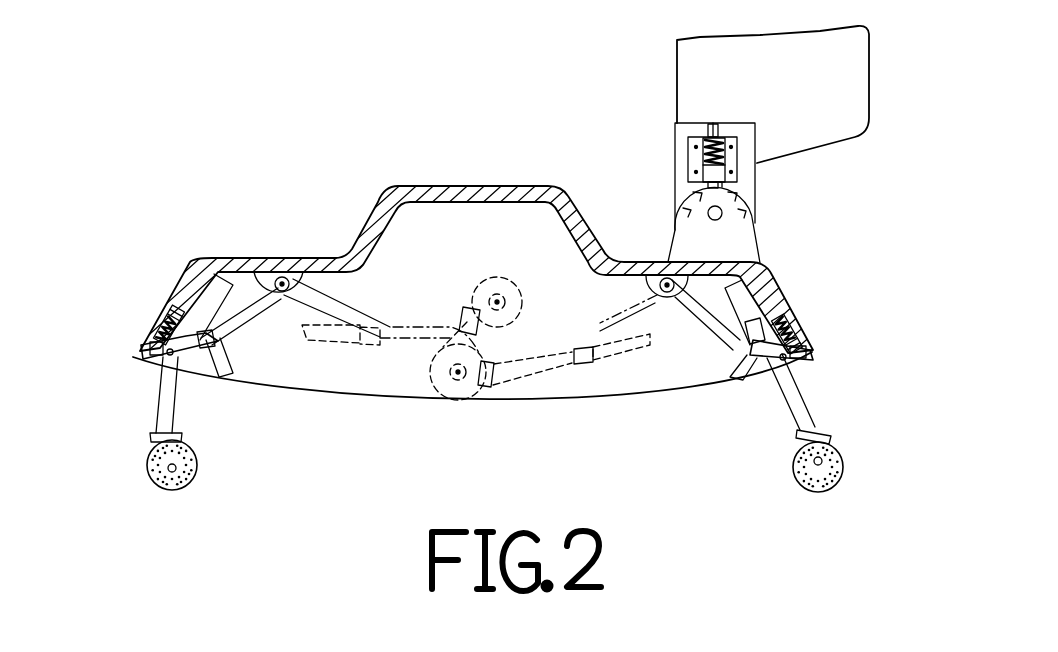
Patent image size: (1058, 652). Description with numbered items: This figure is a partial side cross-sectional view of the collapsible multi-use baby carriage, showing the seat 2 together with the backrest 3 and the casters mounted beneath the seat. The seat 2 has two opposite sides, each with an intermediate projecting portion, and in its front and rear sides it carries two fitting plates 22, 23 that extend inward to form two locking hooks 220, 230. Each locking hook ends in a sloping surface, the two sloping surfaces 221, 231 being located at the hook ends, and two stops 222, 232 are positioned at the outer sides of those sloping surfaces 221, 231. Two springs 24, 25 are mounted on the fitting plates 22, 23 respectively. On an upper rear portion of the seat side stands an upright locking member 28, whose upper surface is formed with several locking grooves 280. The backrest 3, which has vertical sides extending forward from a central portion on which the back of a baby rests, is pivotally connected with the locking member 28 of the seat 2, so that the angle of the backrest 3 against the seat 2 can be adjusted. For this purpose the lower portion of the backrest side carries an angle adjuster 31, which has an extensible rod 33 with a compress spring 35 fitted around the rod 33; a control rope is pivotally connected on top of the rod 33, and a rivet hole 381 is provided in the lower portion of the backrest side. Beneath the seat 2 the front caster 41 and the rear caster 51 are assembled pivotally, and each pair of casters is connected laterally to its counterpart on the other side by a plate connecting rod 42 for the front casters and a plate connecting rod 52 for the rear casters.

The seat 2 is at (420, 186).
The backrest 3 is at (857, 70).
The fitting plate 22 is at (141, 355).
The fitting plate 23 is at (807, 360).
The spring 24 is at (160, 320).
The spring 25 is at (793, 323).
The locking member 28 is at (753, 237).
The angle adjuster 31 is at (692, 172).
The extensible rod 33 is at (703, 153).
The compress spring 35 is at (693, 148).
The front caster 41 is at (195, 480).
The plate connecting rod 42 is at (205, 340).
The rear caster 51 is at (843, 465).
The plate connecting rod 52 is at (753, 327).
The locking hook 220 is at (192, 363).
The sloping surface 221 is at (237, 366).
The stop 222 is at (238, 372).
The locking hook 230 is at (757, 360).
The sloping surface 231 is at (743, 363).
The stop 232 is at (753, 360).
The locking groove 280 is at (744, 212).
The rivet hole 381 is at (708, 215).